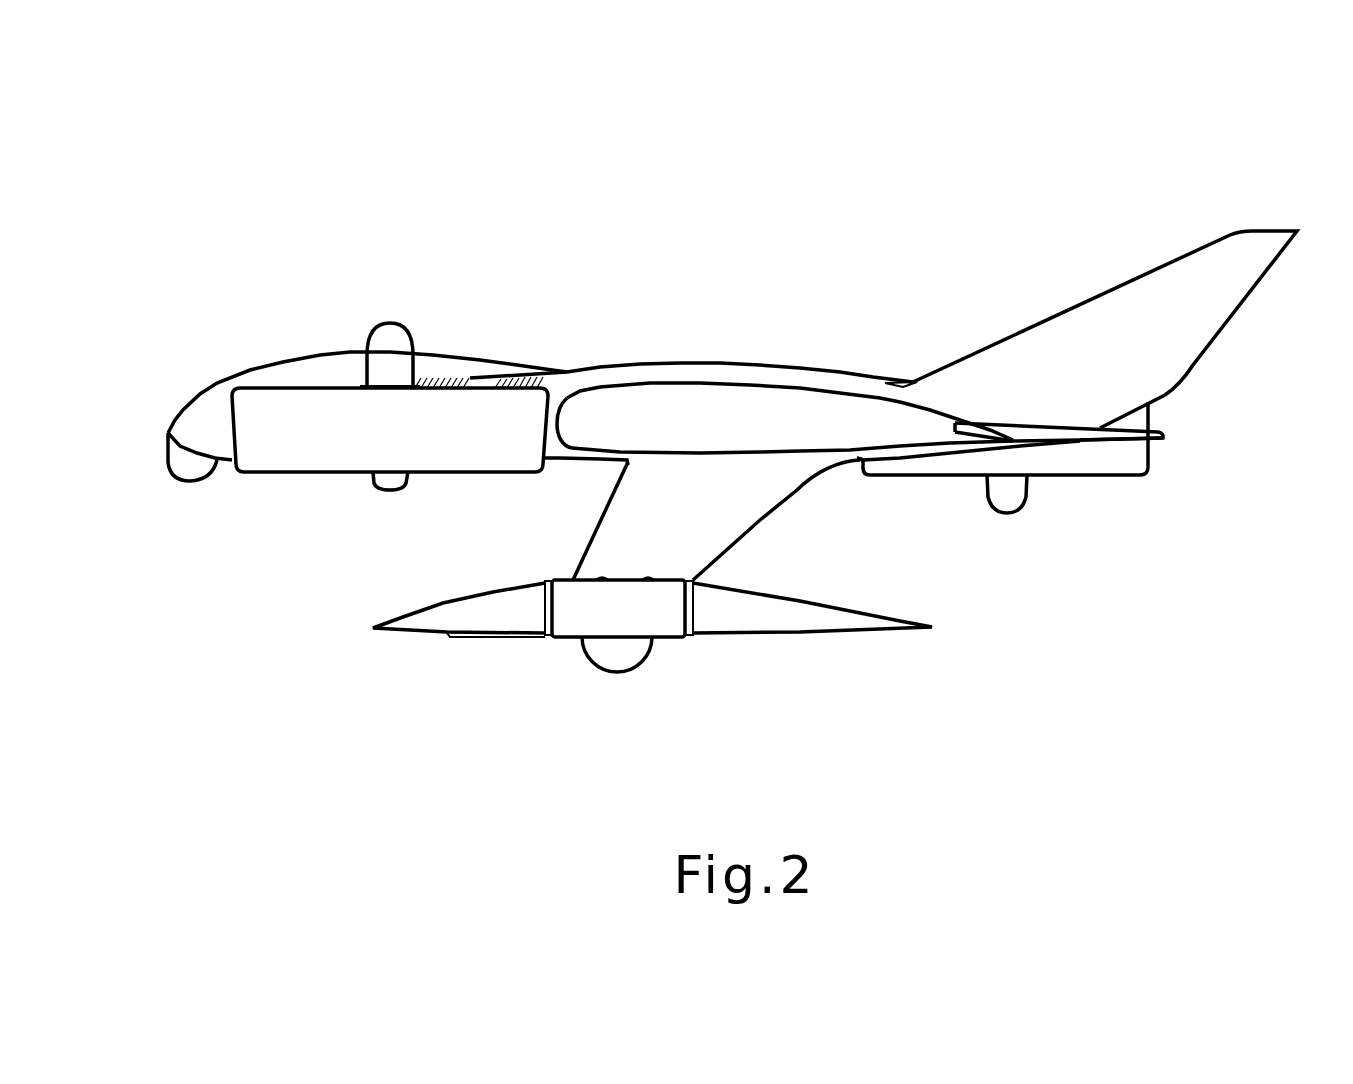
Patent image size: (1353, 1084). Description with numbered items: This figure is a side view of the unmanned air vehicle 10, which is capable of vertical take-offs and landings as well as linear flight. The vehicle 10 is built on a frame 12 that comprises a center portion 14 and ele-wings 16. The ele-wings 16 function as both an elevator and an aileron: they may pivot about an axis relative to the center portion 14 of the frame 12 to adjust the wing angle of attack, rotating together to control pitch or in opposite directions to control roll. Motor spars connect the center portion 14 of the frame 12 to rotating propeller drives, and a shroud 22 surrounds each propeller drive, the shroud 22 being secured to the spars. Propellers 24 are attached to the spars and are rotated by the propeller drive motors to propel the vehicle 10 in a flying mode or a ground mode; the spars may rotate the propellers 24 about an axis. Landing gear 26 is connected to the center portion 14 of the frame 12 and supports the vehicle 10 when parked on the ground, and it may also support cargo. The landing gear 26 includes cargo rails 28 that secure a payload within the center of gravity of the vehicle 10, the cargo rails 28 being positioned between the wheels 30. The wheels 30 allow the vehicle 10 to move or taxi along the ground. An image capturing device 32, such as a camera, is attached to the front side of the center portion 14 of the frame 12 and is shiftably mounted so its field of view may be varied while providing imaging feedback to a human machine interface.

The unmanned air vehicle 10 is at (252, 154).
The frame 12 is at (1142, 345).
The center portion 14 is at (679, 360).
The ele-wings 16 is at (780, 408).
The shroud 22 is at (443, 452).
The propellers 24 is at (301, 490).
The landing gear 26 is at (972, 621).
The cargo rails 28 is at (825, 635).
The wheels 30 is at (640, 662).
The image capturing device 32 is at (170, 470).